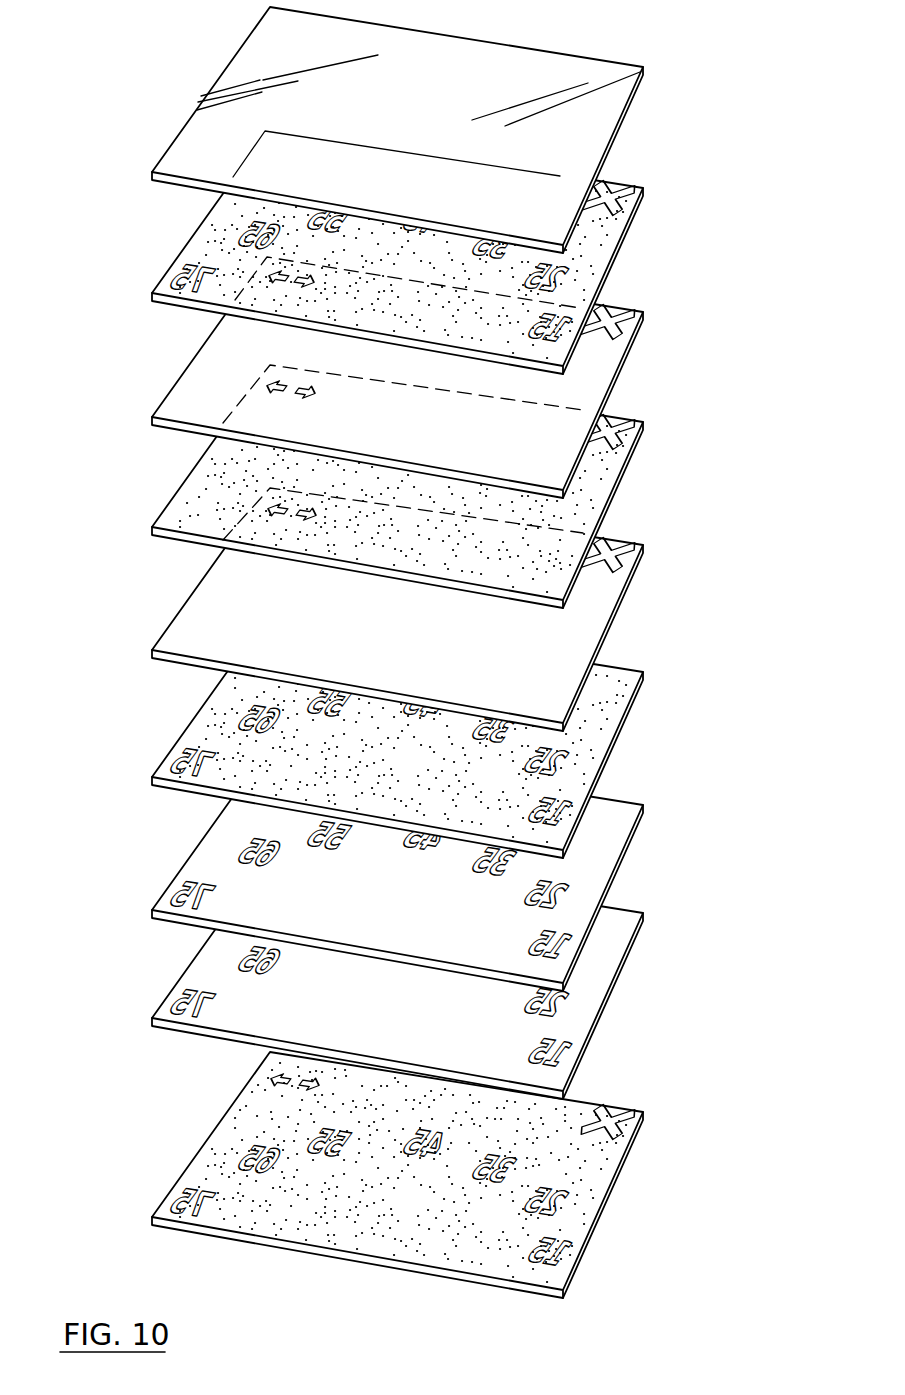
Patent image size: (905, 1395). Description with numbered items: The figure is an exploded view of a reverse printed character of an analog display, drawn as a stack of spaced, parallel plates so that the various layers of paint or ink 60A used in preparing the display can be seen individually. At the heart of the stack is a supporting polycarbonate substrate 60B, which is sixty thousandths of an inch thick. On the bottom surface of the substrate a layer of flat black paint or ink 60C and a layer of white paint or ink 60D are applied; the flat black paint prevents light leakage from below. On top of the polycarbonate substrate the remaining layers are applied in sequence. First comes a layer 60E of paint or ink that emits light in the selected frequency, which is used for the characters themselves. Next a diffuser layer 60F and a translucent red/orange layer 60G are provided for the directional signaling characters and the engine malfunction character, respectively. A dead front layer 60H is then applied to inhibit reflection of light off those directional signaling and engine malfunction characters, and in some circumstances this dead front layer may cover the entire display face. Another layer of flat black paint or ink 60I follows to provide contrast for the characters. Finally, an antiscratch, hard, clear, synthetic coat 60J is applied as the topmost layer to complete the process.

The layers of paint or ink 60A is at (190, 383).
The polycarbonate substrate 60B is at (600, 837).
The flat black paint or ink layer 60C is at (592, 1167).
The white paint or ink layer 60D is at (592, 985).
The light-emitting paint or ink layer 60E is at (583, 728).
The diffuser layer 60F is at (593, 598).
The translucent red/orange layer 60G is at (582, 483).
The dead front layer 60H is at (580, 372).
The flat black paint or ink layer 60I is at (590, 237).
The antiscratch clear synthetic coat 60J is at (592, 113).